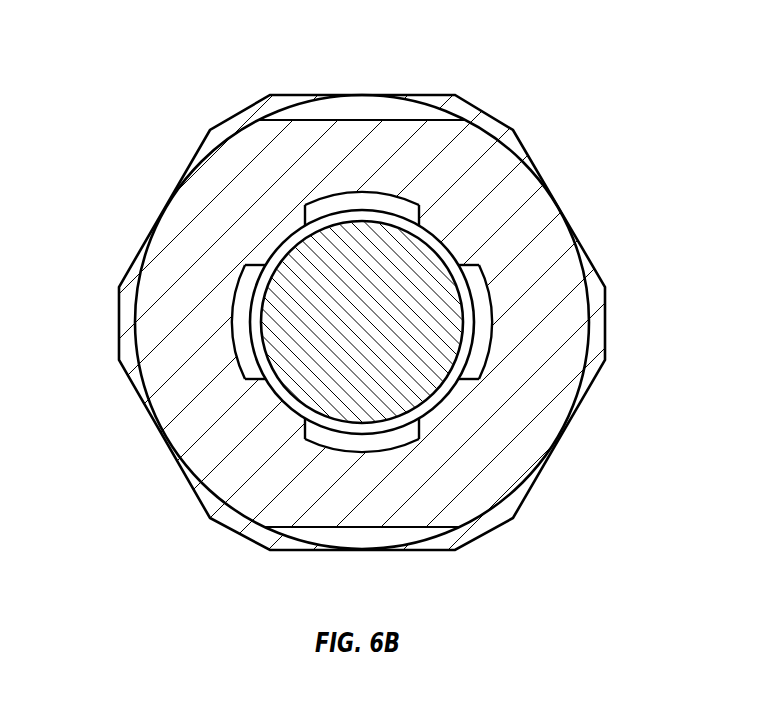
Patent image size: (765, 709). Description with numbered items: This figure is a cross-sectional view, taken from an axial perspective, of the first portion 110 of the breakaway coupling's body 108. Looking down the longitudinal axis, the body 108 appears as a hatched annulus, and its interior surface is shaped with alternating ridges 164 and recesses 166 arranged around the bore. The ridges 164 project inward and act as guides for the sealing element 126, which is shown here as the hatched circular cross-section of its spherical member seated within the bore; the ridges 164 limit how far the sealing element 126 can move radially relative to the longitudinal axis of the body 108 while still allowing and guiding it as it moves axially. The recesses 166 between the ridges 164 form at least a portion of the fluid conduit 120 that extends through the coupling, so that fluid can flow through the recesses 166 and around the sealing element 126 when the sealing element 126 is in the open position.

The first portion 110 is at (572, 74).
The body 108 is at (533, 222).
The fluid conduit 120 is at (333, 205).
The sealing element 126 is at (433, 310).
The ridges 164 is at (275, 403).
The recesses 166 is at (492, 353).